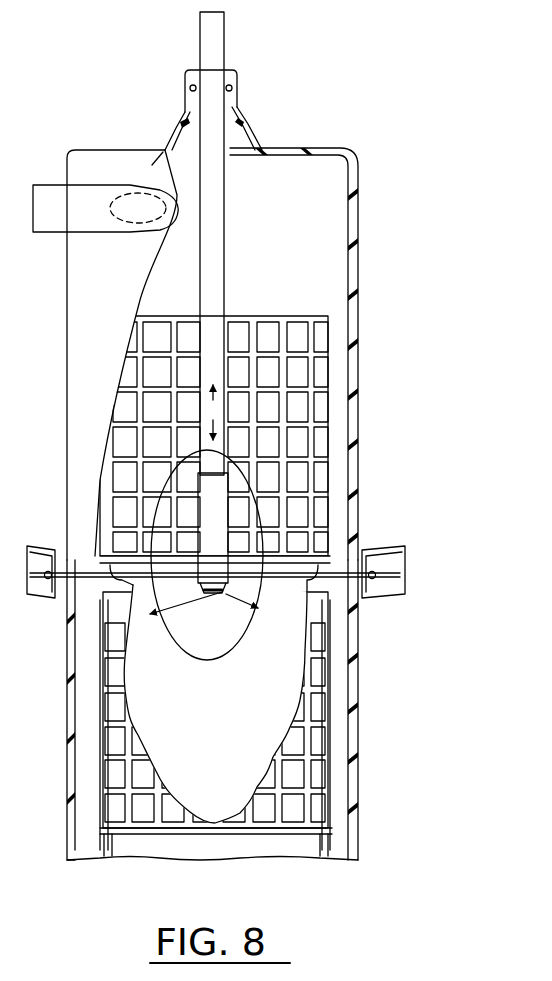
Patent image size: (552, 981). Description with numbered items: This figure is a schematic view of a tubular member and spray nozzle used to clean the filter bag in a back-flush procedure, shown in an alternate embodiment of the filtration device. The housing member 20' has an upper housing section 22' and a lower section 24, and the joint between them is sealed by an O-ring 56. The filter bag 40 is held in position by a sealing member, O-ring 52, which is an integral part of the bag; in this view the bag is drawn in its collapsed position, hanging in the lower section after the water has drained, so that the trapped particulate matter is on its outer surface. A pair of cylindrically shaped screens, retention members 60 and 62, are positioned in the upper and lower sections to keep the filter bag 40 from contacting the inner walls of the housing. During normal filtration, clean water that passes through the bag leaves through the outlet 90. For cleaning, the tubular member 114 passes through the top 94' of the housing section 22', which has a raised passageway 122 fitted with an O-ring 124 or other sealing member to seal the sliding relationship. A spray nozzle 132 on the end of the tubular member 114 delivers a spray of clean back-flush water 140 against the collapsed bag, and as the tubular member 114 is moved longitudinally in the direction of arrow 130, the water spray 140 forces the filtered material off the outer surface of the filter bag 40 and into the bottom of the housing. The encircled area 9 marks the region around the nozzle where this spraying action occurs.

The detail circle 9 is at (203, 660).
The housing member 20' is at (97, 353).
The housing section 22' is at (235, 354).
The lower section 24 is at (356, 736).
The filter bag 40 is at (156, 764).
The O-ring 52 is at (240, 604).
The O-ring 56 is at (368, 556).
The retention member 60 is at (305, 442).
The retention member 62 is at (330, 690).
The outlet 90 is at (52, 234).
The top 94' is at (247, 134).
The tubular member 114 is at (226, 238).
The raised passageway 122 is at (240, 104).
The O-ring 124 is at (234, 78).
The arrow 130 is at (230, 372).
The spray nozzle 132 is at (177, 603).
The back-flush water 140 is at (234, 632).